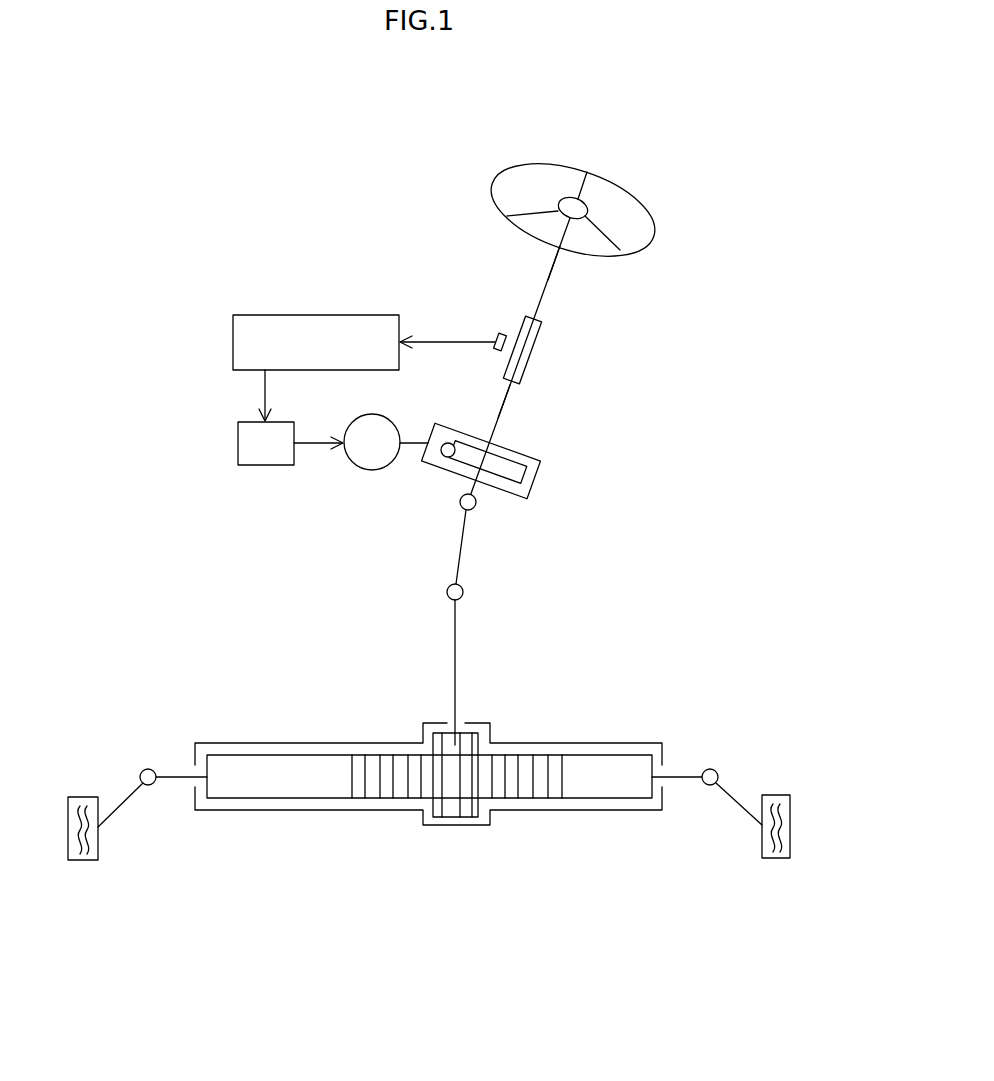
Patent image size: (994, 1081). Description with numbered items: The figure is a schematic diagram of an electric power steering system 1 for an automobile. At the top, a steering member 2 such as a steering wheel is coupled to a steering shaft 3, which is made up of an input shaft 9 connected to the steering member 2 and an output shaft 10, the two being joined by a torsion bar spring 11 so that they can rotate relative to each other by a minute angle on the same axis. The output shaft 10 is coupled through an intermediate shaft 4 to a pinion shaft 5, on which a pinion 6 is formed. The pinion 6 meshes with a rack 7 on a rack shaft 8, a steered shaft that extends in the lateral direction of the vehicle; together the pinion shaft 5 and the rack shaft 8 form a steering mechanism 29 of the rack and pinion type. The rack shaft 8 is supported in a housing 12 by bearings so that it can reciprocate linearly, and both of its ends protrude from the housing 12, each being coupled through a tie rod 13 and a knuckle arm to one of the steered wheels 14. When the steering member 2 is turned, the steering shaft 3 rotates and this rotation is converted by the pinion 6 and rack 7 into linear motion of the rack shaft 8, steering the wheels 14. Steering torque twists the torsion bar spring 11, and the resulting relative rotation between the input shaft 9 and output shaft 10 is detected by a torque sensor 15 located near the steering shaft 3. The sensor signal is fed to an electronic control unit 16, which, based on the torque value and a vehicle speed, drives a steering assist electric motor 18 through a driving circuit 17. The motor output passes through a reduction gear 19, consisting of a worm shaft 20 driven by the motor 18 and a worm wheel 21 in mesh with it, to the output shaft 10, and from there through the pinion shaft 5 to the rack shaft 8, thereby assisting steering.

The electric power steering system 1 is at (678, 157).
The steering member 2 is at (565, 164).
The steering shaft 3 is at (558, 273).
The intermediate shaft 4 is at (464, 549).
The pinion shaft 5 is at (459, 690).
The pinion 6 is at (467, 812).
The rack 7 is at (402, 790).
The rack shaft 8 is at (527, 800).
The input shaft 9 is at (544, 297).
The output shaft 10 is at (503, 411).
The torsion bar spring 11 is at (532, 356).
The housing 12 is at (338, 743).
The tie rod 13 is at (128, 800).
The steered wheels 14 is at (83, 860).
The torque sensor 15 is at (502, 333).
The electronic control unit (ECU) 16 is at (262, 315).
The driving circuit 17 is at (238, 443).
The electric motor 18 is at (372, 470).
The reduction gear 19 is at (543, 465).
The worm shaft 20 is at (445, 463).
The worm wheel 21 is at (520, 477).
The steering mechanism 29 is at (498, 827).